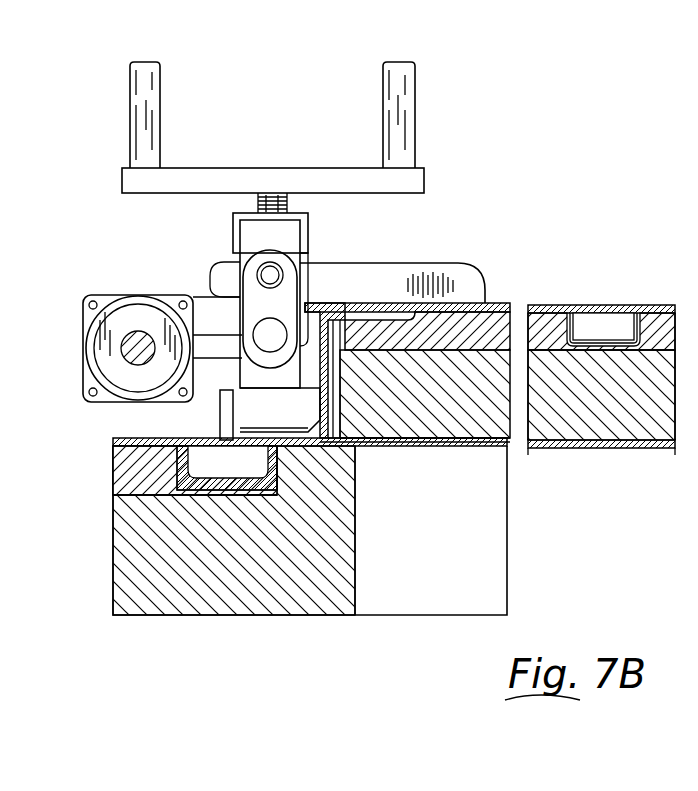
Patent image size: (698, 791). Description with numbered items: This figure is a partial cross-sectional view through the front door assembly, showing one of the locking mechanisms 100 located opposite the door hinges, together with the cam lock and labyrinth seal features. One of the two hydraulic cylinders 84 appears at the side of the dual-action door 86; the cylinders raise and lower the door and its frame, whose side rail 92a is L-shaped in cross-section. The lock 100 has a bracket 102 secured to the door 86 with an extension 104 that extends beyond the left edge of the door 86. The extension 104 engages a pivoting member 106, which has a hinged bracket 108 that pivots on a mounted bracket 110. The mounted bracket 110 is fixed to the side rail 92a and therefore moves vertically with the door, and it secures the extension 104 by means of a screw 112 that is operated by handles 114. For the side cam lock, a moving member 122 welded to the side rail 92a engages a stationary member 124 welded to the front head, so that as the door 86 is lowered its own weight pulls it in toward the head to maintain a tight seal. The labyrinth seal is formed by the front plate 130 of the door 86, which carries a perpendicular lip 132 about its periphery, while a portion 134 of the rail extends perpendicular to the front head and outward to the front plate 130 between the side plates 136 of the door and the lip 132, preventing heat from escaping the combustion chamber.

The hydraulic cylinder 84 is at (122, 296).
The dual-action door 86 is at (555, 304).
The side rail 92a is at (345, 452).
The locking mechanism 100 is at (312, 213).
The bracket 102 is at (435, 265).
The extension 104 is at (312, 282).
The pivoting member 106 is at (270, 233).
The hinged bracket 108 is at (217, 310).
The mounted bracket 110 is at (252, 369).
The screw 112 is at (256, 200).
The handle 114 is at (132, 115).
The moving member 122 is at (280, 410).
The stationary member 124 is at (222, 410).
The front plate 130 is at (487, 301).
The lip 132 is at (330, 303).
The portion 134 is at (328, 426).
The side plate 136 is at (345, 378).